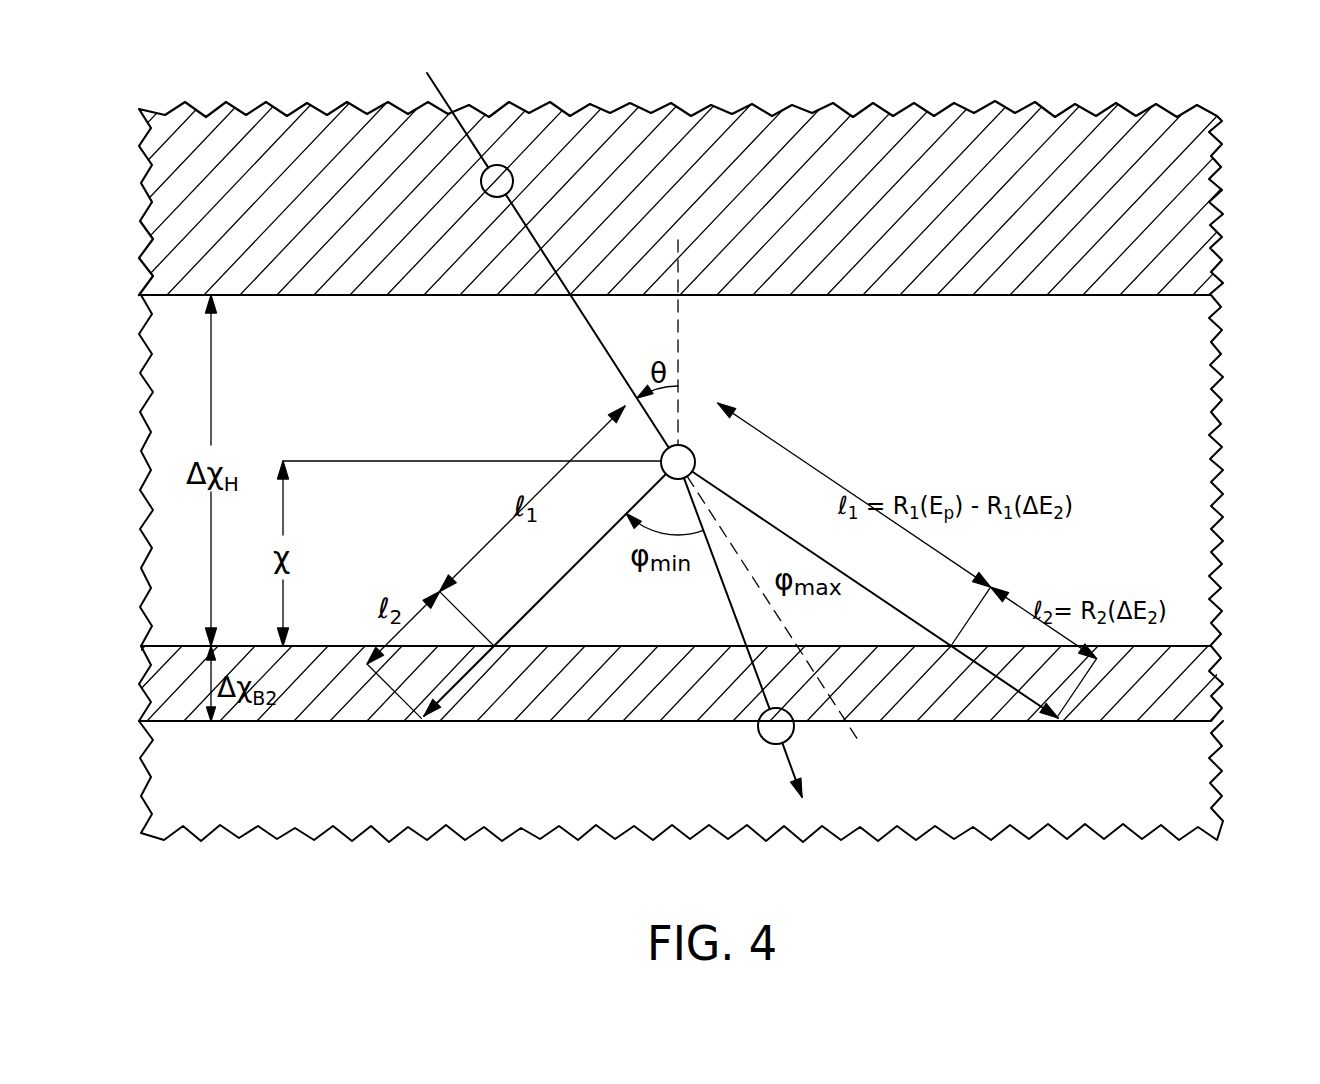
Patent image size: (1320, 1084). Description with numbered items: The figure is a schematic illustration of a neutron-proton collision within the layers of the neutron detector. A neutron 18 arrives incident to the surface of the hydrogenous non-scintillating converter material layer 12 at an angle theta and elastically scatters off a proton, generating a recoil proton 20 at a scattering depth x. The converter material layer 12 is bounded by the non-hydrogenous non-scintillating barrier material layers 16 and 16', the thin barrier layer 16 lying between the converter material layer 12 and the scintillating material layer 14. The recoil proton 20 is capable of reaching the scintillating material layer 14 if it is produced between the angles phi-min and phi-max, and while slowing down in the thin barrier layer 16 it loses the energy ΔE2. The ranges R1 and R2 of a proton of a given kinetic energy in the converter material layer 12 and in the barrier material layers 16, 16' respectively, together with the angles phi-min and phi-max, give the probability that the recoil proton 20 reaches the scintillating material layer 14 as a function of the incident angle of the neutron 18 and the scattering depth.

The converter material layer 12 is at (1198, 470).
The scintillating material layer 14 is at (1200, 770).
The barrier material layer 16 is at (678, 683).
The barrier material layer 16' is at (660, 195).
The neutron 18 is at (497, 165).
The recoil proton 20 is at (697, 463).